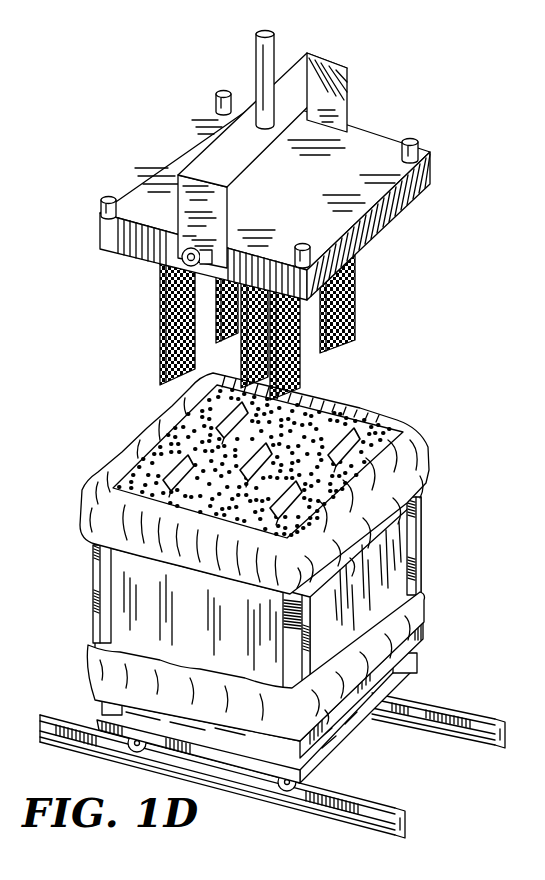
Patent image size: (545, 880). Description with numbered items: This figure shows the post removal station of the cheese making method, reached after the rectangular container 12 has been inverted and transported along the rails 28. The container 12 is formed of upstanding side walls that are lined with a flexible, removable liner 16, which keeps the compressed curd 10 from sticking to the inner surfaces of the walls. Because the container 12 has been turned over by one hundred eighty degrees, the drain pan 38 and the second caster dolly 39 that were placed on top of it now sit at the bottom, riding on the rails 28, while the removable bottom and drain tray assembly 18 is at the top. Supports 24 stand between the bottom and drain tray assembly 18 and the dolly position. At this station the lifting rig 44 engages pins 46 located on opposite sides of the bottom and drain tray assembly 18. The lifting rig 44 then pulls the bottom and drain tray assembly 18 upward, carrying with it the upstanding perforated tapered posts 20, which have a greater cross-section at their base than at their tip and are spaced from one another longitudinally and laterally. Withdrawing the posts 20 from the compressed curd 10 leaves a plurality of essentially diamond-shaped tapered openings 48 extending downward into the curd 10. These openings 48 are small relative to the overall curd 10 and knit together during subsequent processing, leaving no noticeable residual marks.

The curd 10 is at (330, 427).
The rectangular container 12 is at (440, 547).
The flexible, removable liner 16 is at (418, 605).
The removable bottom and drain tray assembly 18 is at (447, 161).
The upstanding perforated tapered posts 20 is at (162, 313).
The supports 24 is at (220, 93).
The rails 28 is at (443, 708).
The drain pan 38 is at (423, 632).
The second caster dolly 39 is at (332, 747).
The lifting rig 44 is at (350, 82).
The pins 46 is at (160, 272).
The diamond-shaped tapered openings 48 is at (233, 436).